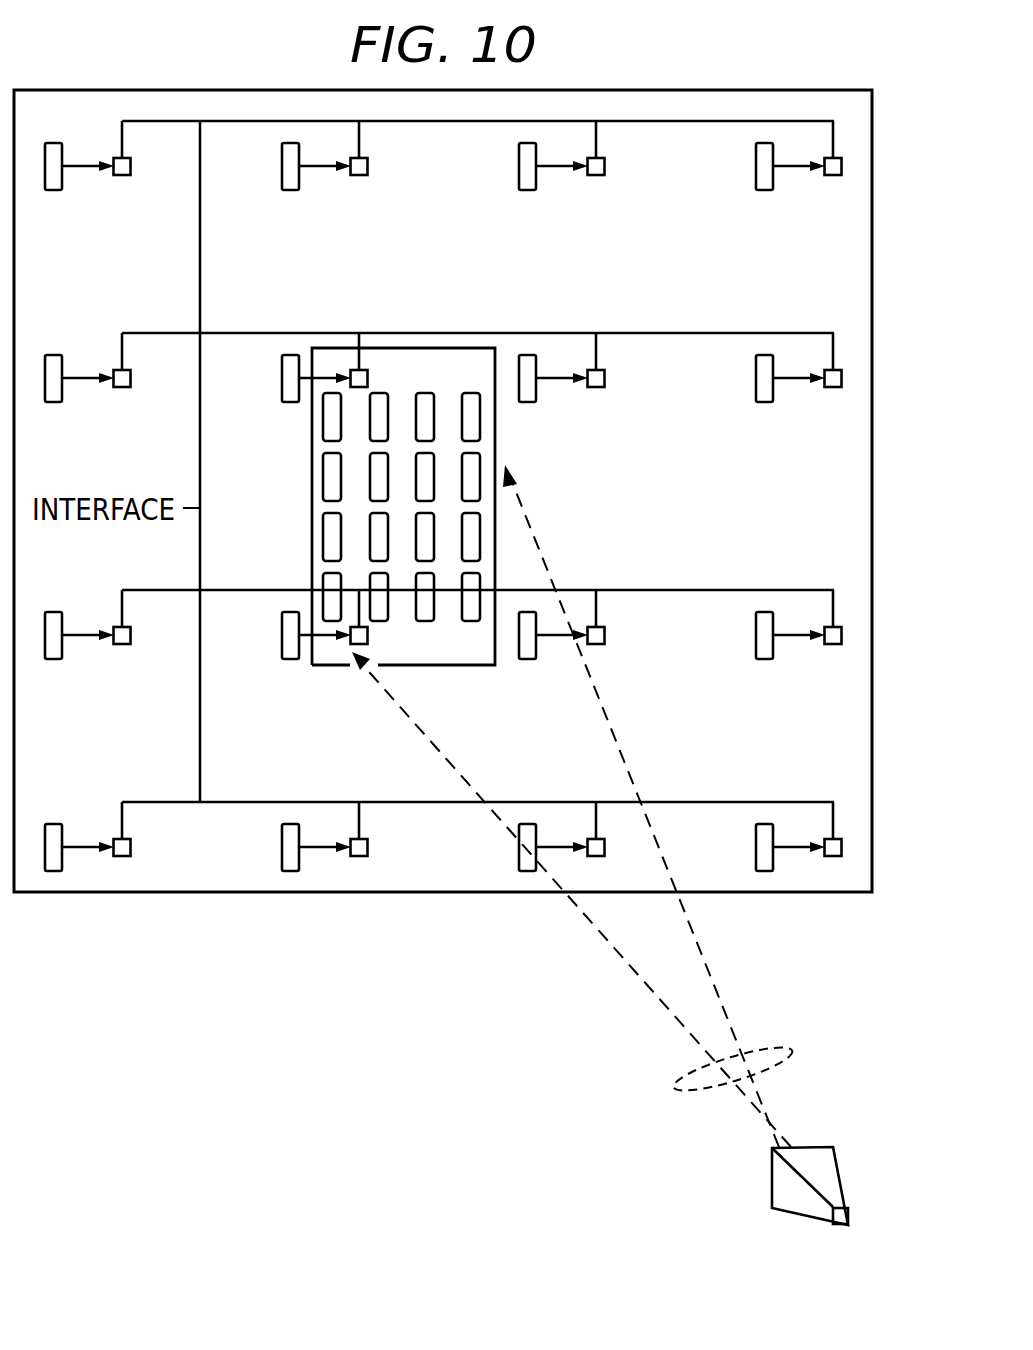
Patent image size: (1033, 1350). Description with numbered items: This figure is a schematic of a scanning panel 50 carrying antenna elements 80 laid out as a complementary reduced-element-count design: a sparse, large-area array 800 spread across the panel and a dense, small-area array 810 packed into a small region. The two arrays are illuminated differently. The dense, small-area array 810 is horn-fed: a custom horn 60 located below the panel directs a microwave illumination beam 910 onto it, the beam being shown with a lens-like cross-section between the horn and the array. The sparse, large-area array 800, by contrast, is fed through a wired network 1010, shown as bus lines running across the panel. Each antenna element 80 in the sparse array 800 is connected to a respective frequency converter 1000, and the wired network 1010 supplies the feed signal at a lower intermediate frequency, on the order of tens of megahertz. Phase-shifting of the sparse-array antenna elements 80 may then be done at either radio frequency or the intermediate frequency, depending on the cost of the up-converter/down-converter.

The scanning panel 50 is at (160, 80).
The antenna element 80 is at (755, 168).
The sparse, large-area array 800 is at (443, 496).
The dense, small-area array 810 is at (470, 666).
The frequency converter 1000 is at (123, 644).
The wired network 1010 is at (328, 333).
The microwave illumination beam 910 is at (675, 1088).
The custom horn 60 is at (802, 1218).